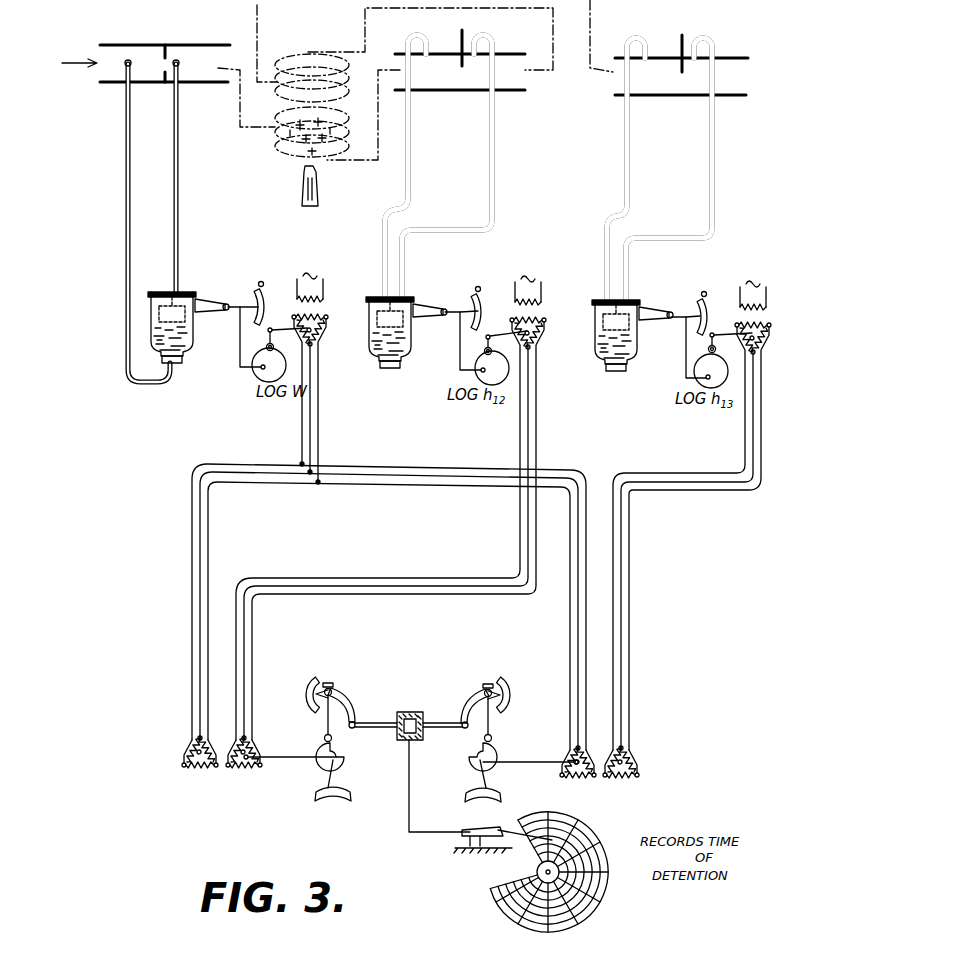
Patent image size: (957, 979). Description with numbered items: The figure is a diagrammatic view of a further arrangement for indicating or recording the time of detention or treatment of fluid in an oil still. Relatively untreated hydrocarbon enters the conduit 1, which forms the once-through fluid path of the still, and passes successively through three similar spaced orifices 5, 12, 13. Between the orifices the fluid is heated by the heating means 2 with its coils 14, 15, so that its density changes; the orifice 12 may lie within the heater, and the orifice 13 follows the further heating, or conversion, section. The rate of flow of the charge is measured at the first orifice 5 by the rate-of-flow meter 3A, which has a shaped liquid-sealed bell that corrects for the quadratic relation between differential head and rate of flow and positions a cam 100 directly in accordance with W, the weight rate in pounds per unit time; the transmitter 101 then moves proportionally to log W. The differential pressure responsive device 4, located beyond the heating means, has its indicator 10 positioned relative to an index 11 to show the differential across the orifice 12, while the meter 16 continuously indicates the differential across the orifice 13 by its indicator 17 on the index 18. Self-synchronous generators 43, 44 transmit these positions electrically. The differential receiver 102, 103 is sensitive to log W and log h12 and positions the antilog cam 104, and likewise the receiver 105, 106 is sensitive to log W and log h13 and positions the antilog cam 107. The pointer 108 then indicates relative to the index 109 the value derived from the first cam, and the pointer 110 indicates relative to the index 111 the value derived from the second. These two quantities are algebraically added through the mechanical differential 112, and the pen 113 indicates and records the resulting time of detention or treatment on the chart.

The conduit 1 is at (204, 83).
The heating means 2 is at (303, 200).
The rate-of-flow meter 3A is at (192, 326).
The differential pressure responsive device 4 is at (410, 330).
The orifice 5 is at (163, 52).
The indicator 10 is at (476, 310).
The index 11 is at (489, 312).
The orifice 12 is at (460, 59).
The orifice 13 is at (680, 62).
The coil 14 is at (288, 153).
The coil 15 is at (302, 56).
The meter 16 is at (637, 334).
The indicator 17 is at (700, 314).
The index 18 is at (712, 316).
The self-synchronous generator 43 is at (405, 508).
The self-synchronous generator 44 is at (706, 515).
The cam 100 is at (283, 372).
The transmitter 101 is at (327, 378).
The differential receiver 102 is at (199, 765).
The differential receiver 103 is at (280, 765).
The antilog cam 104 is at (347, 746).
The receiver 105 is at (539, 775).
The receiver 106 is at (621, 775).
The antilog cam 107 is at (470, 744).
The pointer 108 is at (333, 684).
The index 109 is at (306, 688).
The pointer 110 is at (491, 688).
The index 111 is at (510, 702).
The mechanical differential 112 is at (398, 712).
The pen 113 is at (540, 818).